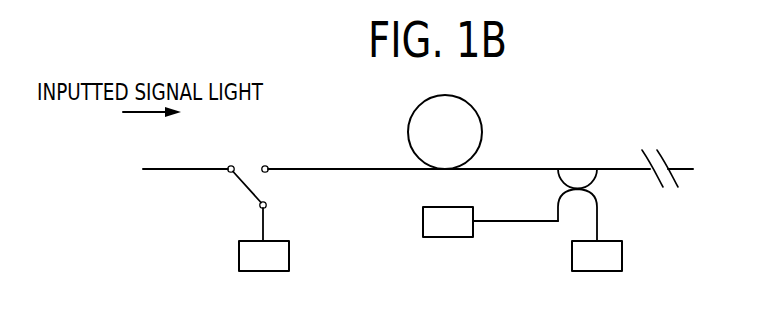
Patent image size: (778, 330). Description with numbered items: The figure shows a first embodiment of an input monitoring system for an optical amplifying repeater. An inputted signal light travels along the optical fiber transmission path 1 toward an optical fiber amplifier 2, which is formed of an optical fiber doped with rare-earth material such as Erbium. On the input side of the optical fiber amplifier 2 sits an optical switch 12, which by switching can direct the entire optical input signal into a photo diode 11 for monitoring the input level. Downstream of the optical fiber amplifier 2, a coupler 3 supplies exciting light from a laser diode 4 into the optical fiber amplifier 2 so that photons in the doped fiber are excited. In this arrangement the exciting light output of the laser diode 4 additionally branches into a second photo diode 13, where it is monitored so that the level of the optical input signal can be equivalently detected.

The optical fiber transmission path 1 is at (332, 170).
The optical fiber amplifier 2 is at (480, 121).
The coupler 3 is at (597, 174).
The laser diode 4 is at (622, 252).
The photo diode 11 is at (289, 253).
The optical switch 12 is at (237, 183).
The photo diode 13 is at (423, 218).